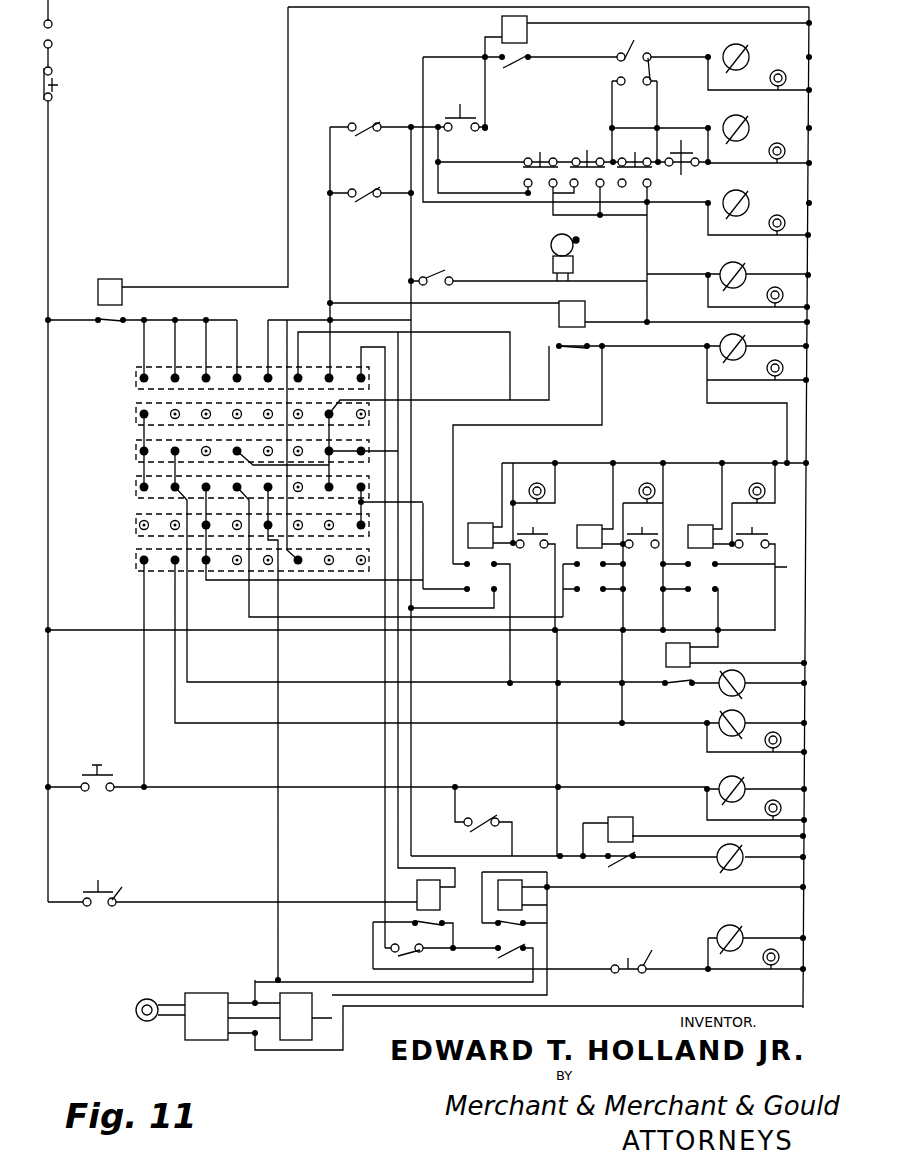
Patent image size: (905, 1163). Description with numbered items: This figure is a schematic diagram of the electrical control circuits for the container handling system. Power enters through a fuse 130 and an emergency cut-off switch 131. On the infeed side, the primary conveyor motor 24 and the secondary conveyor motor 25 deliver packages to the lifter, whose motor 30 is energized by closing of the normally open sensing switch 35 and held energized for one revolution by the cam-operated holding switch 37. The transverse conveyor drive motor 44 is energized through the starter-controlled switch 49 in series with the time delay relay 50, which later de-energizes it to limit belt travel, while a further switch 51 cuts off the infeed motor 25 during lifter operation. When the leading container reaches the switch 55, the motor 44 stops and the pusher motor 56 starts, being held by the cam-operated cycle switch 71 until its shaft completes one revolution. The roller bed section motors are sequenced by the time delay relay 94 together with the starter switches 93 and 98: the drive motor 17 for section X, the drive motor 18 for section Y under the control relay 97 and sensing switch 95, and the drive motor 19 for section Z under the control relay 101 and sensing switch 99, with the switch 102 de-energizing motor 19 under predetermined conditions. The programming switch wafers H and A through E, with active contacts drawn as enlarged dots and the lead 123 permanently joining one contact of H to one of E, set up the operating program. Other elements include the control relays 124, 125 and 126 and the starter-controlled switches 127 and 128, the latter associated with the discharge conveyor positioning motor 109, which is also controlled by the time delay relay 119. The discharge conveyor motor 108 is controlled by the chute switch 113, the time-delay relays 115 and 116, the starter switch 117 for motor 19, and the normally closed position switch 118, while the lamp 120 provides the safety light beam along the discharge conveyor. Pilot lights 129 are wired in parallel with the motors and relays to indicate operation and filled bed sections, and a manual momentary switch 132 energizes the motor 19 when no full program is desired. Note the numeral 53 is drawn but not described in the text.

The fuse 130 is at (52, 30).
The emergency cut-off switch 131 is at (52, 73).
The control relay 125 is at (112, 279).
The switch 93 is at (372, 110).
The switch 98 is at (350, 200).
The holding switch 37 is at (452, 118).
The time delay relay 50 is at (527, 53).
The switch 49 is at (642, 32).
The switch 51 is at (651, 70).
The motor 25 is at (743, 45).
The motor 30 is at (743, 116).
The drive motor 44 is at (743, 191).
The pusher motor 56 is at (740, 263).
The drive motor 17 is at (740, 335).
The pilot lights 129 is at (770, 80).
The switch 55 is at (587, 150).
The cycle switch 71 is at (532, 177).
The switch 53 is at (640, 172).
The switch 35 is at (683, 170).
The motor starter controlled switch 127 is at (440, 270).
The time delay relay 94 is at (580, 332).
The control relay 124 is at (476, 523).
The control relay 101 is at (588, 525).
The control relay 97 is at (698, 525).
The switch 102 is at (538, 532).
The switch 99 is at (647, 532).
The switch 95 is at (758, 516).
The lead 123 is at (136, 537).
The control relay 126 is at (666, 655).
The motor 24 is at (742, 690).
The drive motor 18 is at (719, 716).
The drive motor 19 is at (740, 780).
The momentary contact switch 132 is at (88, 775).
The switch 113 is at (122, 880).
The time delay relay 119 is at (633, 826).
The motor starter controlled switch 128 is at (485, 812).
The positioning motor 109 is at (740, 850).
The time-delay relay 116 is at (417, 890).
The time-delay relay 115 is at (522, 898).
The motor starter operated switch 117 is at (415, 956).
The switch 118 is at (644, 962).
The discharge conveyor motor 108 is at (740, 928).
The lamp 120 is at (148, 998).